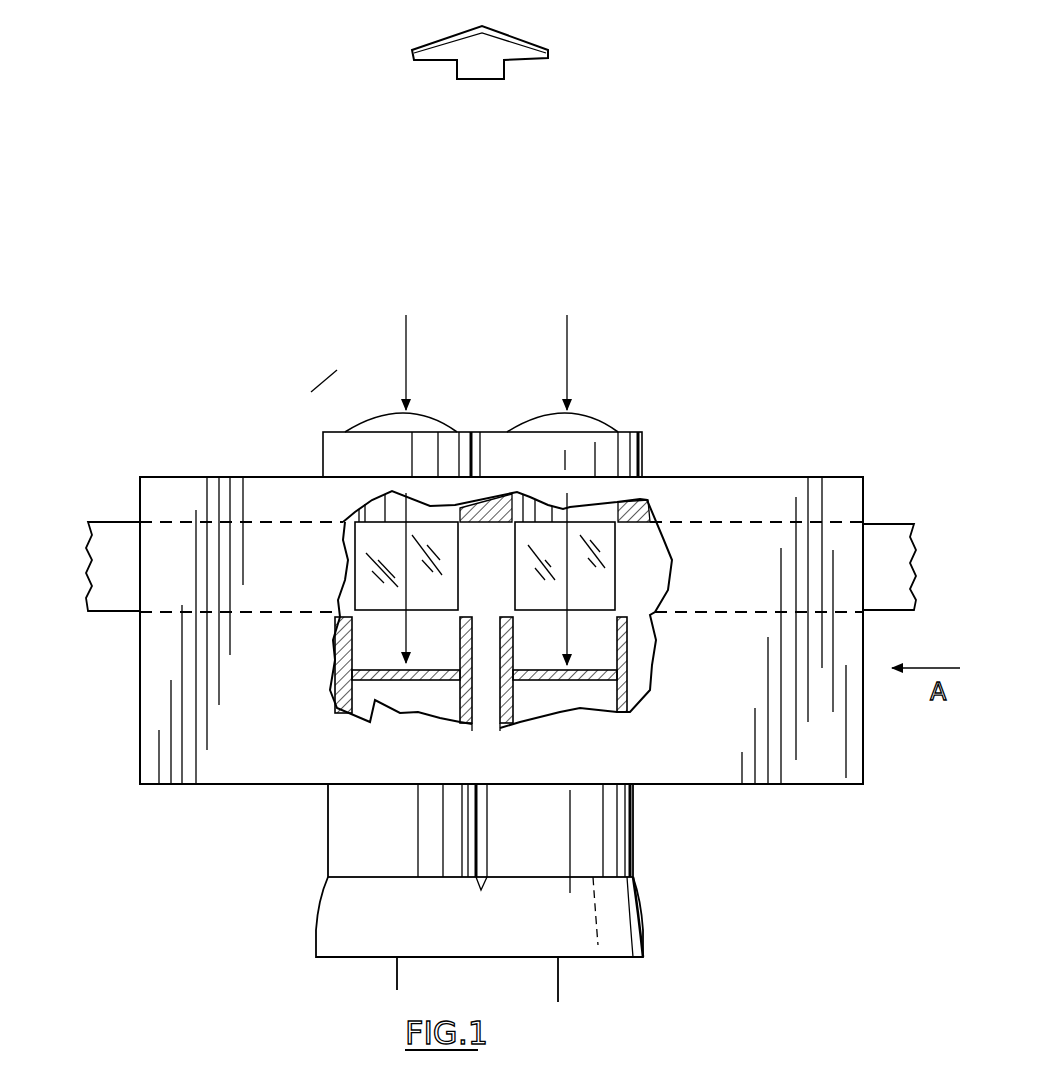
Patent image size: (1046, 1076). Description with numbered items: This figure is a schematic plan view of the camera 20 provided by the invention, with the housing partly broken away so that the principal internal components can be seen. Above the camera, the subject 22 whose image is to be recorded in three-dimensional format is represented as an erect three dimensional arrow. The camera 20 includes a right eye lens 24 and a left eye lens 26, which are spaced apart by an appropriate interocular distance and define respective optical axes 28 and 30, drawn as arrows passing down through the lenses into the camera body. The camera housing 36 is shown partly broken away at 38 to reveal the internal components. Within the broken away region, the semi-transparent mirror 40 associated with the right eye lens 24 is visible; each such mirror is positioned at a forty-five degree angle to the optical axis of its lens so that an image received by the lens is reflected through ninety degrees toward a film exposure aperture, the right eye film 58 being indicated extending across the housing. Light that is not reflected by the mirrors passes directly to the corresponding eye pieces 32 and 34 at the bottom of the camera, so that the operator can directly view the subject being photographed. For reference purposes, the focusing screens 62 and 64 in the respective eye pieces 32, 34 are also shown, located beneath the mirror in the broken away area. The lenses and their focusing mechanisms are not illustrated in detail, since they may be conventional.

The camera 20 is at (762, 465).
The subject 22 is at (443, 127).
The right eye lens 24 is at (600, 420).
The left eye lens 26 is at (420, 425).
The optical axis 28 is at (567, 353).
The optical axis 30 is at (406, 340).
The eye piece 32 is at (636, 862).
The eye piece 34 is at (326, 860).
The camera housing 36 is at (855, 765).
The broken away portion 38 is at (656, 650).
The semi-transparent mirror 40 is at (605, 585).
The right eye film 58 is at (890, 532).
The focusing screen 62 is at (540, 681).
The focusing screen 64 is at (372, 720).